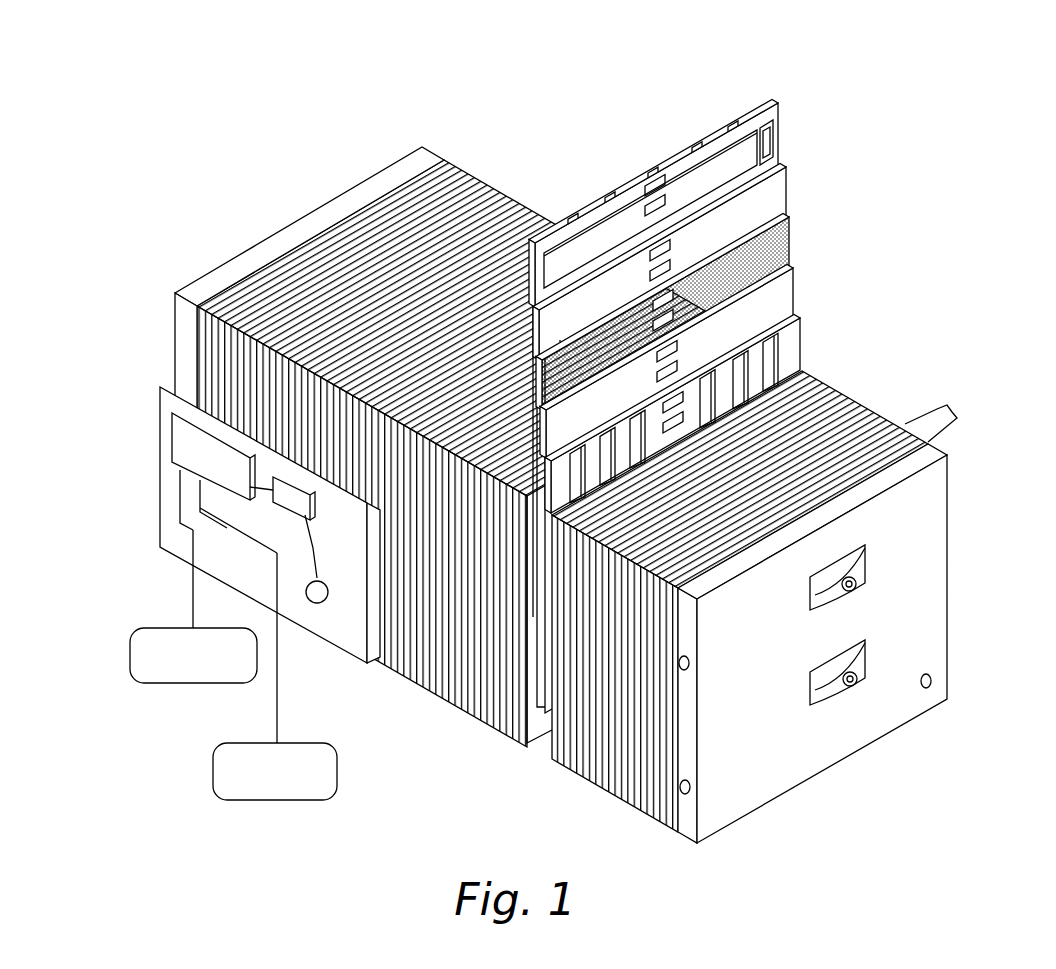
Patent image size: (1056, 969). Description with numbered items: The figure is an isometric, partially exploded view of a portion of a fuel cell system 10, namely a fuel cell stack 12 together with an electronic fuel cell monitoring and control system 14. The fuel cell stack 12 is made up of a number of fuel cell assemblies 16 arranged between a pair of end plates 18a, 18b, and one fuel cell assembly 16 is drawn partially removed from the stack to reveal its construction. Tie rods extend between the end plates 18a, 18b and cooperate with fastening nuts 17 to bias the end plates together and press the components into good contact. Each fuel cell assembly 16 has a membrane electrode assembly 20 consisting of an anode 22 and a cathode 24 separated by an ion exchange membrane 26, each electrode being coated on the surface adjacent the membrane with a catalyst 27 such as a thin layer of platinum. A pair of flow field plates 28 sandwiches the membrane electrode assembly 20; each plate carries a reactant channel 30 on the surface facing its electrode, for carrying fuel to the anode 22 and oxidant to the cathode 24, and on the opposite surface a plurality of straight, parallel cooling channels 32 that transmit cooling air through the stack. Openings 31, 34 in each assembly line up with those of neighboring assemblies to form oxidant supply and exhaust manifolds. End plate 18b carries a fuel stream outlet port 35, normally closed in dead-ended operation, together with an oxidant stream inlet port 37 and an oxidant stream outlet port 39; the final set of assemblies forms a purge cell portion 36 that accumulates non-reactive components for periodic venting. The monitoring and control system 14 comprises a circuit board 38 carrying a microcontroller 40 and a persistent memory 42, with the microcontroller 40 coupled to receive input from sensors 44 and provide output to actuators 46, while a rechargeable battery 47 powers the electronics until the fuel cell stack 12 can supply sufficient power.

The fuel cell system 10 is at (538, 453).
The fuel cell stack 12 is at (599, 453).
The electronic fuel cell monitoring and control system 14 is at (216, 617).
The fuel cell assembly 16 is at (737, 268).
The fastening nut 17 is at (858, 584).
The end plate 18a is at (328, 210).
The end plate 18b is at (837, 635).
The membrane electrode assembly 20 is at (716, 289).
The anode 22 is at (687, 256).
The cathode 24 is at (795, 287).
The ion exchange membrane 26 is at (789, 237).
The catalyst 27 is at (607, 283).
The flow field plate 28 is at (684, 195).
The reactant channel 30 is at (768, 136).
The opening 31 is at (655, 185).
The cooling channel 32 is at (690, 150).
The opening 34 is at (668, 198).
The fuel stream outlet port 35 is at (932, 682).
The purge cell portion 36 is at (941, 415).
The oxidant stream inlet port 37 is at (690, 663).
The circuit board 38 is at (229, 525).
The oxidant stream outlet port 39 is at (686, 795).
The microcontroller 40 is at (172, 440).
The persistent memory 42 is at (305, 505).
The sensors 44 is at (135, 682).
The actuators 46 is at (215, 798).
The rechargeable battery 47 is at (327, 601).